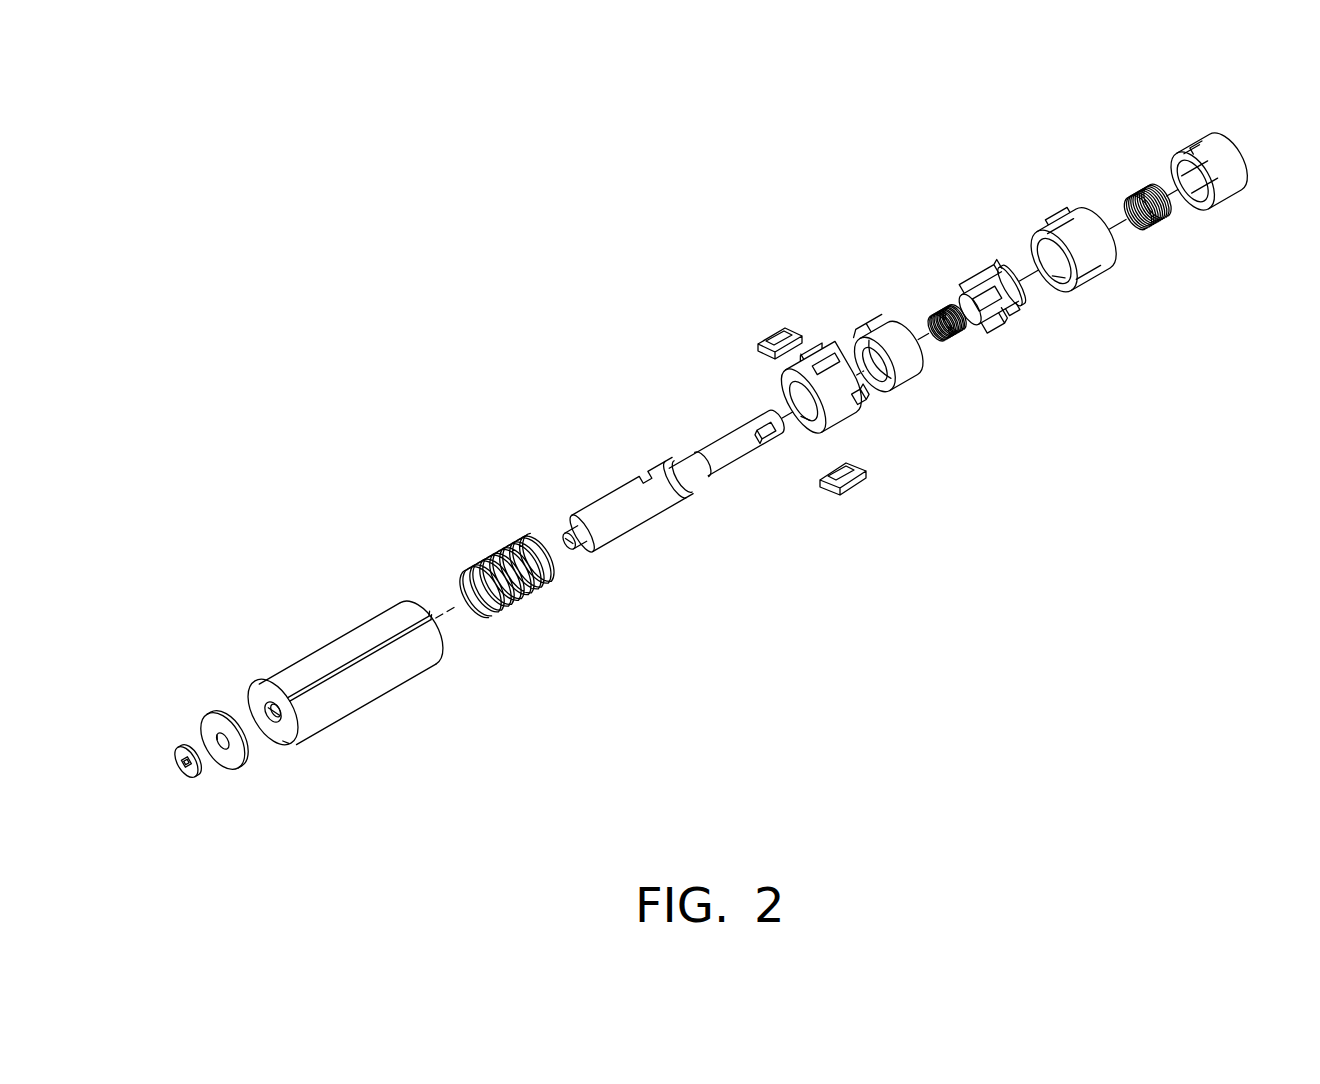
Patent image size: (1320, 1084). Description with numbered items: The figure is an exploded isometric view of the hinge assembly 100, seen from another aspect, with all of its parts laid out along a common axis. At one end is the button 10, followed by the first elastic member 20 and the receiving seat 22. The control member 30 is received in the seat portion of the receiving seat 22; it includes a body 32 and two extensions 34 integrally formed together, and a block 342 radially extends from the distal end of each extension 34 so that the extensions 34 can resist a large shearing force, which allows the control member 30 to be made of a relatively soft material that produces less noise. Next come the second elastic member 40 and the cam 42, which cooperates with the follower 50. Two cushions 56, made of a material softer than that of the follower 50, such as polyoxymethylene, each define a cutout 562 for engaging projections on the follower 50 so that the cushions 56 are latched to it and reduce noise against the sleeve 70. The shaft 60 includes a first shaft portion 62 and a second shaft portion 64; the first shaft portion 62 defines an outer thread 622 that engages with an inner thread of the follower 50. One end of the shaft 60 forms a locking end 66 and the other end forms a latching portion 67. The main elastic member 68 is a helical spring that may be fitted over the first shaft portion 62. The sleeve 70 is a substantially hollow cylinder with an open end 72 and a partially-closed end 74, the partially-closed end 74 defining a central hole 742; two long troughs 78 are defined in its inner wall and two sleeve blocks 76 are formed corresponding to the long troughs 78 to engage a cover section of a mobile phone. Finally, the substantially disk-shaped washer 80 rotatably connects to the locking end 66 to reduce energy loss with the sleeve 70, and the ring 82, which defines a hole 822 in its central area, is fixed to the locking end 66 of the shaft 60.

The hinge assembly 100 is at (462, 236).
The button 10 is at (1208, 140).
The first elastic member 20 is at (1150, 187).
The receiving seat 22 is at (1082, 222).
The control member 30 is at (997, 273).
The body 32 is at (1027, 293).
The extensions 34 is at (1020, 318).
The block 342 is at (990, 333).
The second elastic member 40 is at (945, 307).
The cam 42 is at (877, 333).
The follower 50 is at (787, 385).
The cushions 56 is at (772, 328).
The cutout 562 is at (778, 326).
The shaft 60 is at (628, 447).
The first shaft portion 62 is at (617, 527).
The outer thread 622 is at (670, 490).
The second shaft portion 64 is at (730, 455).
The locking end 66 is at (577, 548).
The latching portion 67 is at (770, 437).
The main elastic member 68 is at (498, 551).
The sleeve 70 is at (370, 730).
The open end 72 is at (436, 648).
The partially-closed end 74 is at (272, 736).
The central hole 742 is at (250, 706).
The sleeve blocks 76 is at (336, 656).
The long troughs 78 is at (418, 598).
The washer 80 is at (217, 733).
The ring 82 is at (183, 758).
The hole 822 is at (178, 773).